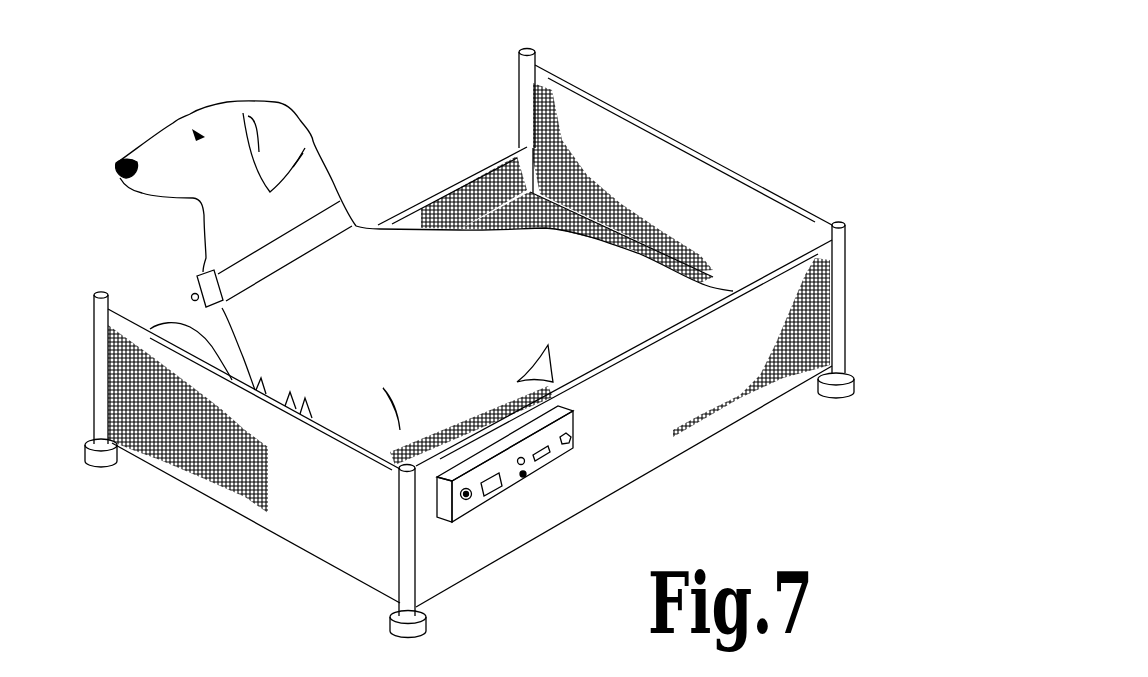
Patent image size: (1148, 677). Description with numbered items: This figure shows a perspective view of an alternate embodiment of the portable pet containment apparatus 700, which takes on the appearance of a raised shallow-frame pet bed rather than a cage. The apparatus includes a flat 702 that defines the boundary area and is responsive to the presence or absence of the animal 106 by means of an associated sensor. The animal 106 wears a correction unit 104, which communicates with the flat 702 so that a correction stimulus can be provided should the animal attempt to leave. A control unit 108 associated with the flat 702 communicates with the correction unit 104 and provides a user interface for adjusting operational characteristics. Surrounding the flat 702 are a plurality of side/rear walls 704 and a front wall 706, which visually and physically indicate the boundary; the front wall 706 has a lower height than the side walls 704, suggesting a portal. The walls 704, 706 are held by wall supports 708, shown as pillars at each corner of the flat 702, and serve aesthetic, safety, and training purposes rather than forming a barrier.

The correction unit 104 is at (194, 280).
The animal 106 is at (553, 278).
The control unit 108 is at (547, 463).
The portable pet containment apparatus 700 is at (514, 354).
The flat 702 is at (517, 213).
The side/rear walls 704 is at (427, 626).
The front wall 706 is at (802, 309).
The wall supports 708 is at (456, 206).